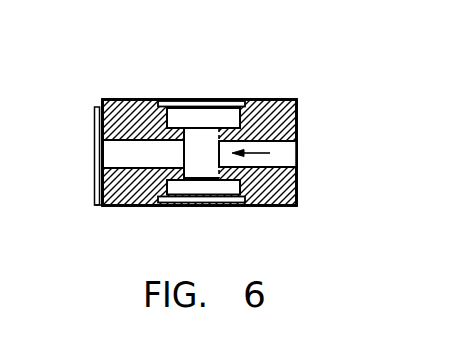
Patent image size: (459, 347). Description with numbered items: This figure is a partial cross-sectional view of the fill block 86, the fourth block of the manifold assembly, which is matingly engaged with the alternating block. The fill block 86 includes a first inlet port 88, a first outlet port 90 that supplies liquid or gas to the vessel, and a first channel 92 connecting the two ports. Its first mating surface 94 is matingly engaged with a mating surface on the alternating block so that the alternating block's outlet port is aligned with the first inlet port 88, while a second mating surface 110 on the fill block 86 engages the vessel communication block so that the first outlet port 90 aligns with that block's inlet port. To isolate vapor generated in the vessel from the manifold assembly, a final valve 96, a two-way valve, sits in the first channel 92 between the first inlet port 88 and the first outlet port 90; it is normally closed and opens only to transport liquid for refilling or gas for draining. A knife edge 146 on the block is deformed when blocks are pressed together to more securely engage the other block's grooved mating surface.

The fill block 86 is at (126, 92).
The first mating surface 94 is at (297, 125).
The final valve 96 is at (190, 110).
The first channel 92 is at (143, 154).
The first inlet port 88 is at (298, 150).
The knife edge 146 is at (95, 142).
The first outlet port 90 is at (105, 153).
The second mating surface 110 is at (95, 203).